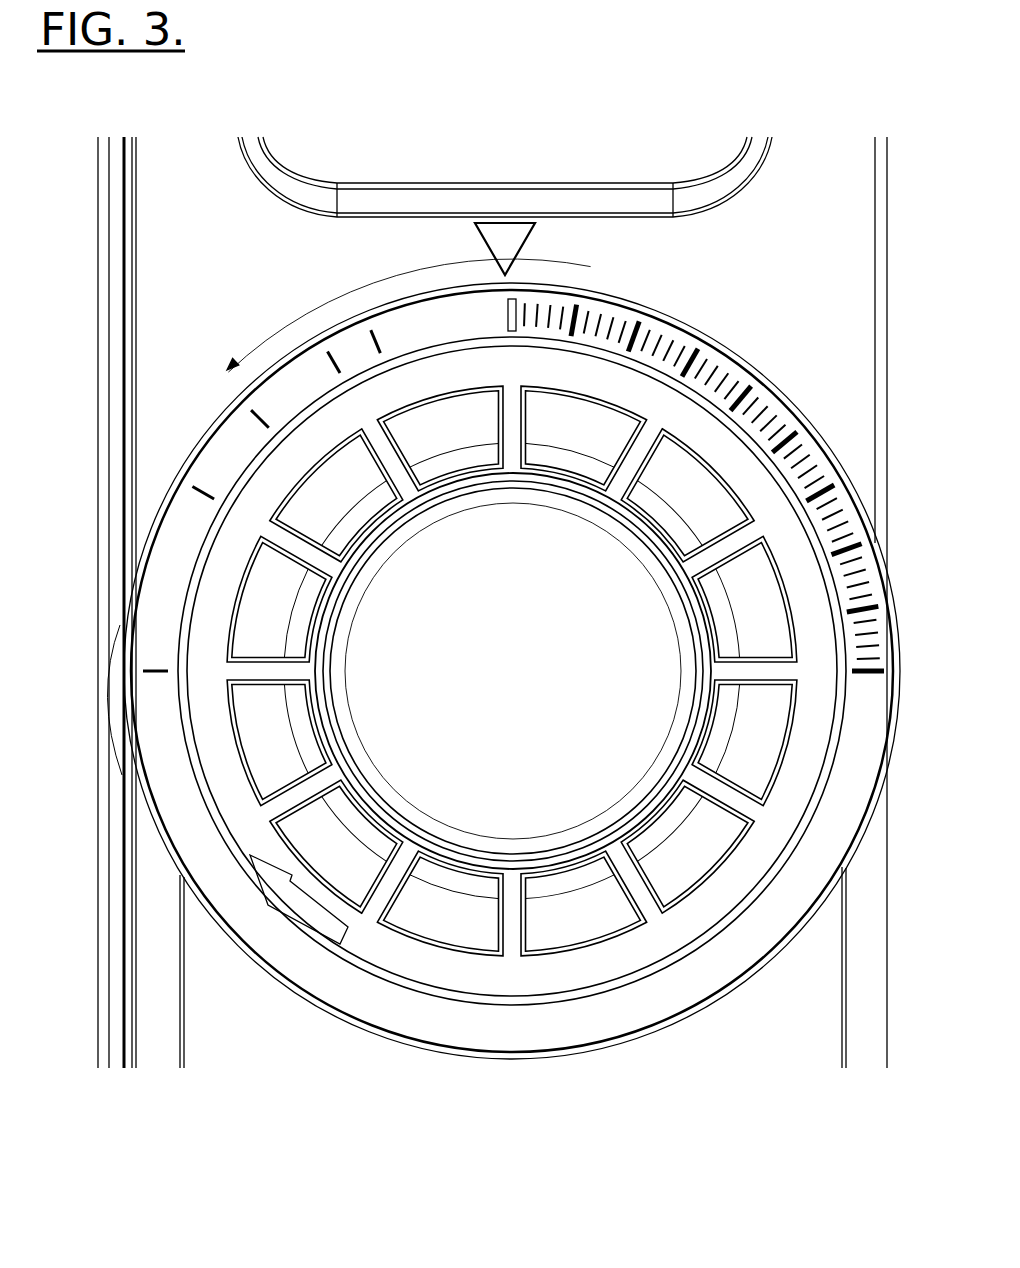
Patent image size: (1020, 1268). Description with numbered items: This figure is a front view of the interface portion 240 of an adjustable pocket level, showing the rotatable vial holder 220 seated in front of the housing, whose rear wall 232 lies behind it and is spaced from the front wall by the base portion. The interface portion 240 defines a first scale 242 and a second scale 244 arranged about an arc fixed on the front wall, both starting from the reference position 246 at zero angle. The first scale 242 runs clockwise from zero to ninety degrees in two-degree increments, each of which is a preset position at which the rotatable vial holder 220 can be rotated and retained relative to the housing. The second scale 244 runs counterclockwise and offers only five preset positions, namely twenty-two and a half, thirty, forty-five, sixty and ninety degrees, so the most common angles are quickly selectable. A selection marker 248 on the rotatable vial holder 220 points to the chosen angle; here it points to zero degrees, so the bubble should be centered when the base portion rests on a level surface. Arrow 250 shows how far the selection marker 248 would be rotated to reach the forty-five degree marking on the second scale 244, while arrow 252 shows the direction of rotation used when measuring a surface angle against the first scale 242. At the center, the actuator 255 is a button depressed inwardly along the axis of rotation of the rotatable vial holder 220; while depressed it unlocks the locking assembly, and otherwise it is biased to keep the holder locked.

The rotatable vial holder 220 is at (187, 220).
The rear wall 232 is at (123, 1017).
The interface portion 240 is at (702, 1032).
The first scale 242 is at (800, 391).
The second scale 244 is at (214, 464).
The reference position 246 is at (500, 301).
The selection marker 248 is at (571, 206).
The arrow 250 is at (389, 306).
The arrow 252 is at (598, 264).
The actuator 255 is at (402, 686).